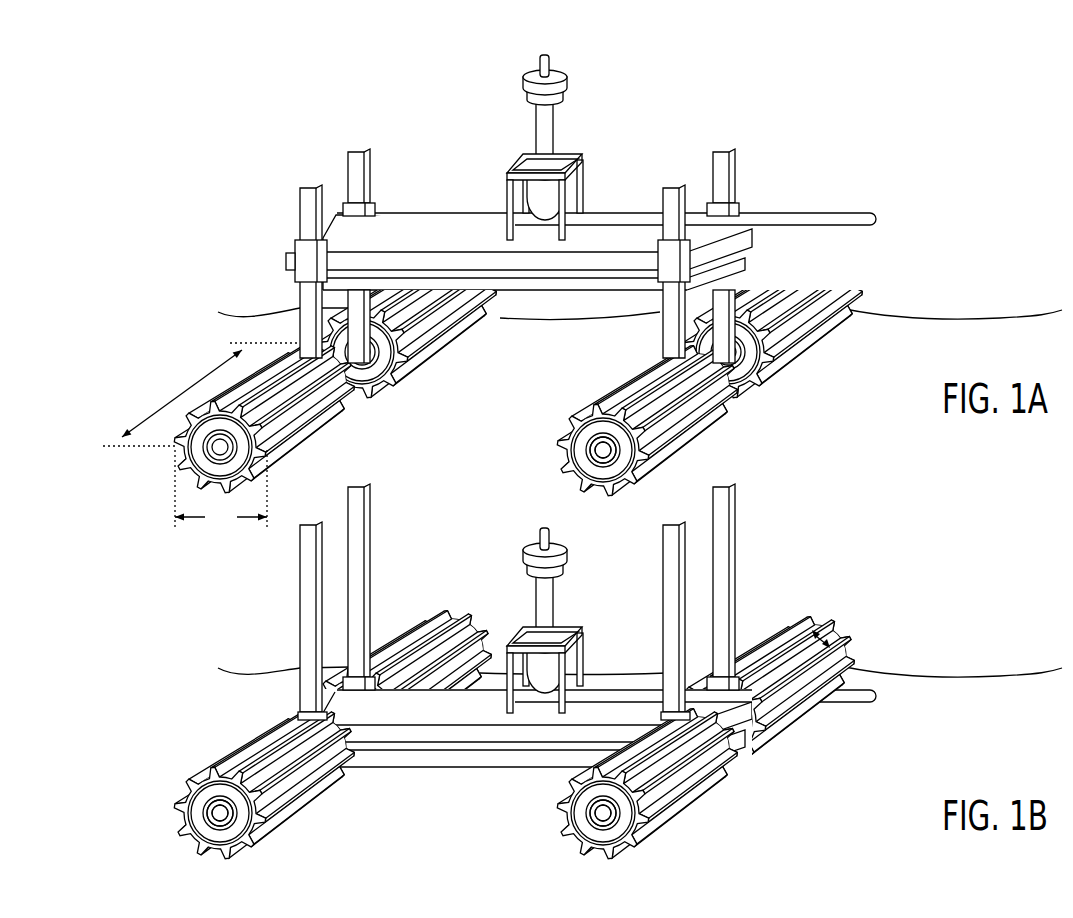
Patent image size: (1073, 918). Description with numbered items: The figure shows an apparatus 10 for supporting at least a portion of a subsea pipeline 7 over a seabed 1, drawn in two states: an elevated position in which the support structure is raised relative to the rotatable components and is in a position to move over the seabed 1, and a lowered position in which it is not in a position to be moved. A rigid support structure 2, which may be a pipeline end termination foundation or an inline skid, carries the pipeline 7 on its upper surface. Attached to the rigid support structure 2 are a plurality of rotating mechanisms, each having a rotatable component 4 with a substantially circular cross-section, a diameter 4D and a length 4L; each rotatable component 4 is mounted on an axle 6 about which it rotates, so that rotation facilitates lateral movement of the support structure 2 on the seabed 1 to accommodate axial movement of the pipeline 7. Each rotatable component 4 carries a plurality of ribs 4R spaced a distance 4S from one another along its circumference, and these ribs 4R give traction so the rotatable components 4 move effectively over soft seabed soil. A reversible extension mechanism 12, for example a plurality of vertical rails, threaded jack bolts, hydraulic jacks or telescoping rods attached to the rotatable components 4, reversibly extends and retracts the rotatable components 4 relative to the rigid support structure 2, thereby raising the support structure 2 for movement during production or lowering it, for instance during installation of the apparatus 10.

In FIG. 1A, the seabed 1 is at (1003, 318).
In FIG. 1B, the seabed 1 is at (1003, 677).
In FIG. 1A, the rigid support structure 2 is at (467, 216).
In FIG. 1B, the rigid support structure 2 is at (537, 729).
In FIG. 1A, the rotatable component 4 is at (297, 462).
In FIG. 1B, the rotatable component 4 is at (440, 618).
In FIG. 1A, the diameter 4D is at (221, 488).
In FIG. 1A, the length 4L is at (201, 394).
In FIG. 1B, the ribs 4R is at (817, 632).
In FIG. 1B, the rib spacing distance 4S is at (828, 642).
In FIG. 1A, the axle 6 is at (603, 450).
In FIG. 1B, the axle 6 is at (220, 813).
In FIG. 1A, the subsea pipeline 7 is at (814, 213).
In FIG. 1B, the subsea pipeline 7 is at (606, 696).
In FIG. 1A, the apparatus 10 is at (582, 291).
In FIG. 1A, the reversible extension mechanism 12 is at (303, 187).
In FIG. 1B, the reversible extension mechanism 12 is at (316, 578).